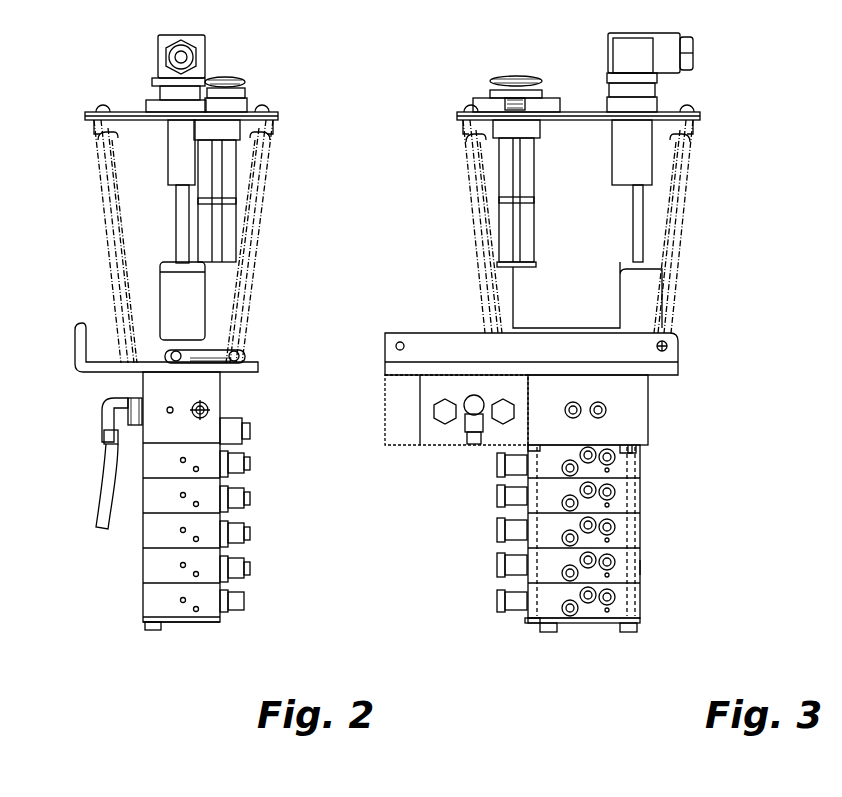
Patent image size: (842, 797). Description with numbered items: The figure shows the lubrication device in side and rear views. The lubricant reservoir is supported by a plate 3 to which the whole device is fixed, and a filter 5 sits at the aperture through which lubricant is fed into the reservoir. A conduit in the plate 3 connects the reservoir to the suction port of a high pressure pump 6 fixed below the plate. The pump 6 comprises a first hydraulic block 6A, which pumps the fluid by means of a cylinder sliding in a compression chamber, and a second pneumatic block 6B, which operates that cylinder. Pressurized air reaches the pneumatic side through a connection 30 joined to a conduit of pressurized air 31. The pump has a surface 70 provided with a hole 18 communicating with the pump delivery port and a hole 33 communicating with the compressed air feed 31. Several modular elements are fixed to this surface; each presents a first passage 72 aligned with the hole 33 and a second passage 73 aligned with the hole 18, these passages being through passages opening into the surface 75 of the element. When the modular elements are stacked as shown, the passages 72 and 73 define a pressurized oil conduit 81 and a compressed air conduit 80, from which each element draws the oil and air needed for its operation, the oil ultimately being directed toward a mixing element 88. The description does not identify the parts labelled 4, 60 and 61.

In FIG. 2, the plate 3 is at (78, 363).
In FIG. 2, the drive motor 4 is at (177, 168).
In FIG. 2, the filter 5 is at (228, 184).
In FIG. 2, the high pressure pump 6 is at (232, 88).
In FIG. 3, the high pressure pump 6 is at (368, 453).
In FIG. 3, the first hydraulic block 6A is at (592, 392).
In FIG. 3, the second pneumatic block 6B is at (428, 388).
In FIG. 3, the hole 18 is at (628, 456).
In FIG. 2, the connection 30 is at (130, 394).
In FIG. 3, the connection 30 is at (466, 408).
In FIG. 2, the conduit of pressurized air 31 is at (102, 509).
In FIG. 3, the hole 33 is at (566, 443).
In FIG. 2, the valve manifold base 60 is at (195, 622).
In FIG. 3, the valve manifold base 60 is at (589, 623).
In FIG. 2, the mounting feet 61 is at (157, 631).
In FIG. 3, the mounting feet 61 is at (548, 632).
In FIG. 3, the surface 70 is at (608, 442).
In FIG. 3, the first passage 72 is at (502, 448).
In FIG. 3, the second passage 73 is at (628, 457).
In FIG. 3, the surface 75 is at (548, 510).
In FIG. 3, the compressed air conduit 80 is at (524, 622).
In FIG. 3, the pressurized oil conduit 81 is at (643, 568).
In FIG. 3, the mixing element 88 is at (505, 493).